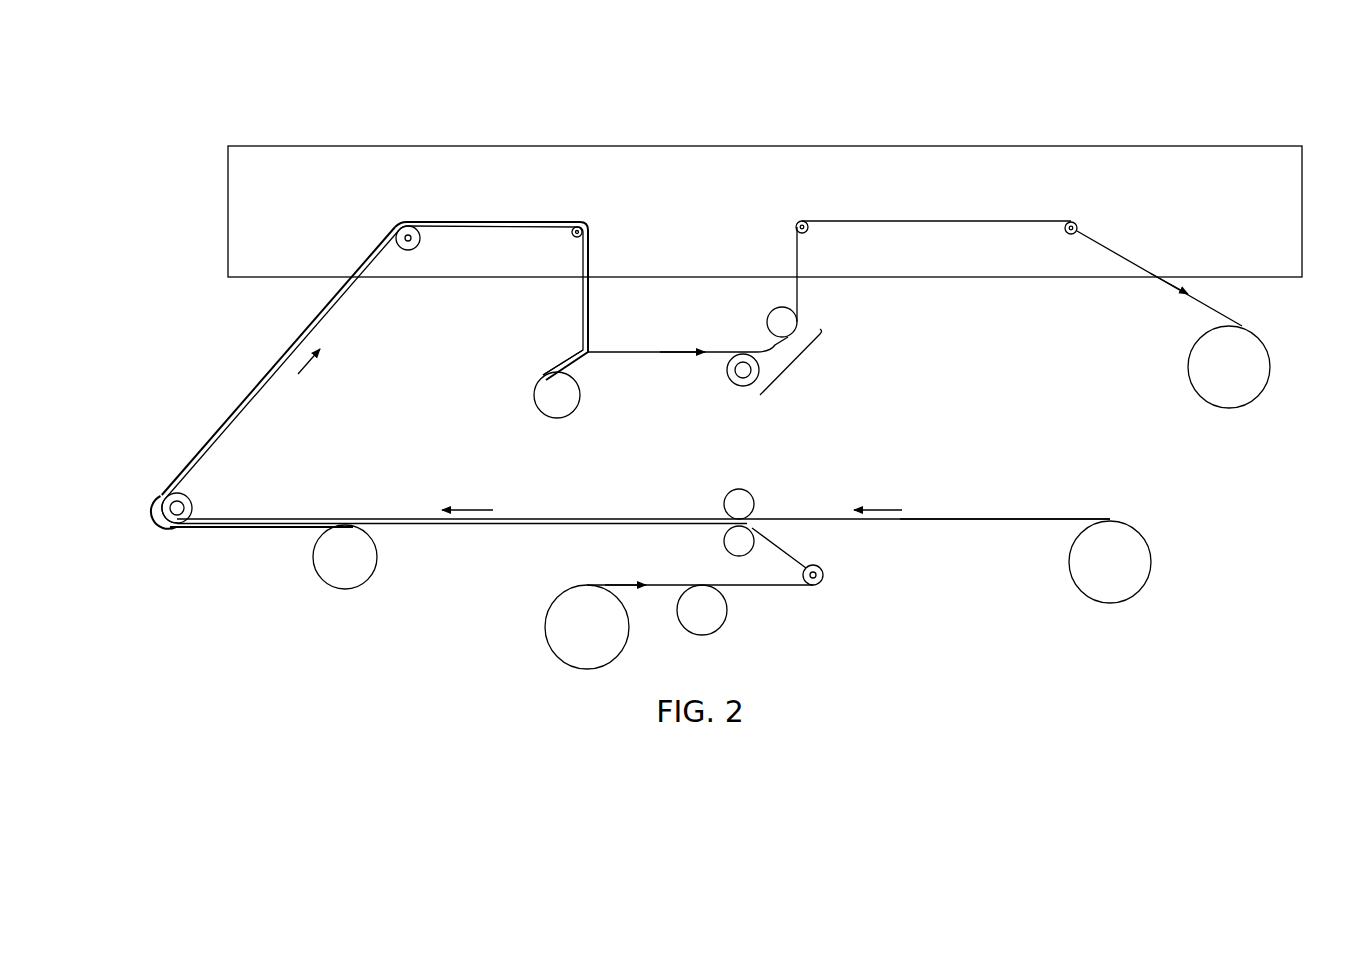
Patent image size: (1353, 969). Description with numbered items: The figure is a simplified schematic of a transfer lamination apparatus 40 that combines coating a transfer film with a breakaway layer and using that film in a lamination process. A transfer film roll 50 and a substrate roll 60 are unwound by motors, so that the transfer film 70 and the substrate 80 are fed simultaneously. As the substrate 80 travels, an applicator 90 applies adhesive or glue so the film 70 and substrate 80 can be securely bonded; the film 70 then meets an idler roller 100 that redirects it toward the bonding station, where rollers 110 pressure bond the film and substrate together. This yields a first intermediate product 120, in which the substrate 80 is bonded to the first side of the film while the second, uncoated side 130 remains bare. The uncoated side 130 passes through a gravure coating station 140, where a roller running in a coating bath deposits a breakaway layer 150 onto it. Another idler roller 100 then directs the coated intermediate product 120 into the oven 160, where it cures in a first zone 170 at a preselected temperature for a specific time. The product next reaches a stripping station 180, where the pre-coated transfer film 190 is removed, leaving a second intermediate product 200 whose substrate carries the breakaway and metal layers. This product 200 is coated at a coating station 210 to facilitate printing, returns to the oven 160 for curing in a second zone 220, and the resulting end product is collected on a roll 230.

The apparatus 40 is at (917, 76).
The transfer film roll 50 is at (543, 628).
The substrate roll 60 is at (1152, 573).
The transfer film 70 is at (748, 590).
The substrate 80 is at (952, 507).
The applicator 90 is at (727, 622).
The idler roller 100 is at (395, 230).
The rollers 110 is at (747, 490).
The first intermediate product 120 is at (582, 312).
The uncoated side of the transfer film 130 is at (420, 528).
The gravure coating station 140 is at (313, 567).
The breakaway layer 150 is at (223, 528).
The oven 160 is at (270, 277).
The first zone 170 is at (408, 202).
The stripping station 180 is at (528, 397).
The pre-coated transfer film 190 is at (570, 358).
The second intermediate product 200 is at (660, 357).
The coating station 210 is at (782, 362).
The oven zone 2 220 is at (852, 204).
The end product roll 230 is at (1190, 347).